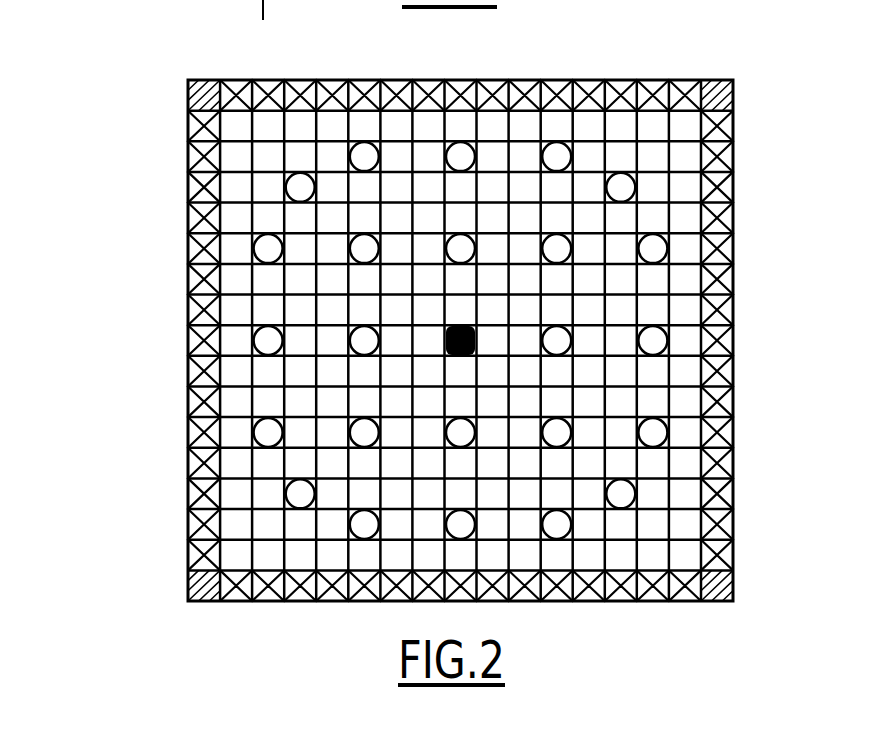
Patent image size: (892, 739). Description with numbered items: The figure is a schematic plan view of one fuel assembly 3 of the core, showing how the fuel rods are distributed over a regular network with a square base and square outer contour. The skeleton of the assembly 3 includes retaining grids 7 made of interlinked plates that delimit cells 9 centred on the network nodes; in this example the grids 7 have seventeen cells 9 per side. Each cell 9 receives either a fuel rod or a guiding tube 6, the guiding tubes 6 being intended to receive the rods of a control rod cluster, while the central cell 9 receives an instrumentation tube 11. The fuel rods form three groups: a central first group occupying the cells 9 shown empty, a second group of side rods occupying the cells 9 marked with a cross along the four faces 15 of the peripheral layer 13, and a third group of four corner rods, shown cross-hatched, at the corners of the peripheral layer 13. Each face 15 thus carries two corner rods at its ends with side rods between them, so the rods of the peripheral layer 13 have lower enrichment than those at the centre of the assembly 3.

The fuel assembly 3 is at (127, 444).
The guiding tube 6 is at (262, 246).
The grid 7 is at (232, 57).
The cell 9 is at (685, 310).
The instrumentation tube 11 is at (455, 328).
The peripheral layer 13 is at (184, 508).
The face 15 is at (184, 311).